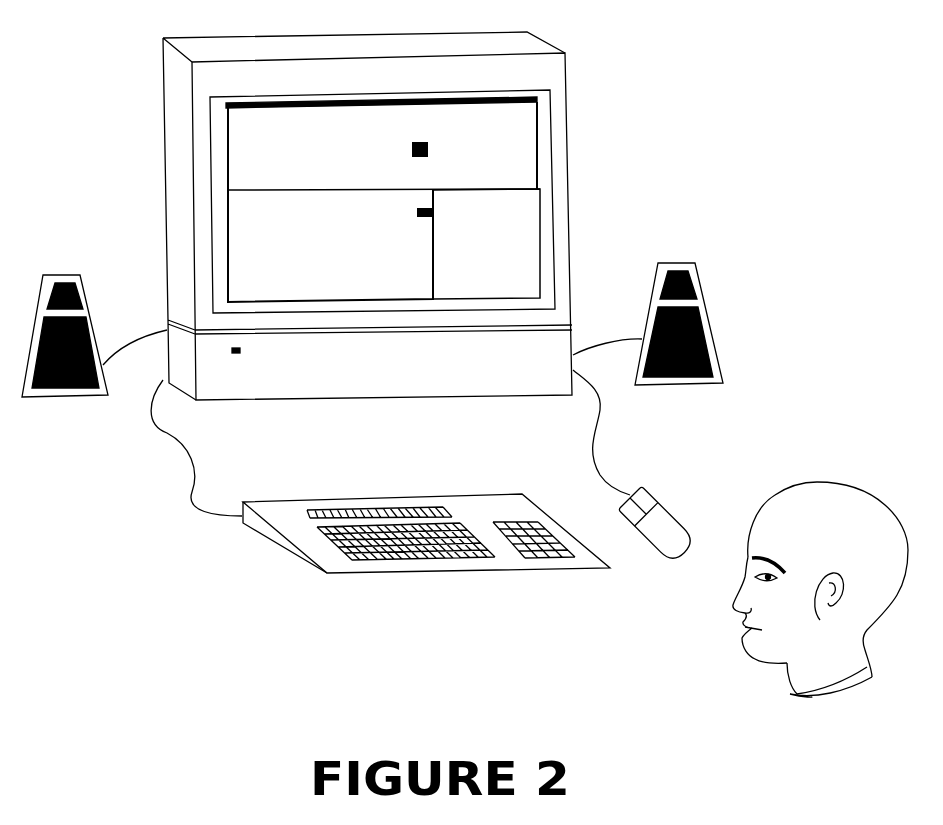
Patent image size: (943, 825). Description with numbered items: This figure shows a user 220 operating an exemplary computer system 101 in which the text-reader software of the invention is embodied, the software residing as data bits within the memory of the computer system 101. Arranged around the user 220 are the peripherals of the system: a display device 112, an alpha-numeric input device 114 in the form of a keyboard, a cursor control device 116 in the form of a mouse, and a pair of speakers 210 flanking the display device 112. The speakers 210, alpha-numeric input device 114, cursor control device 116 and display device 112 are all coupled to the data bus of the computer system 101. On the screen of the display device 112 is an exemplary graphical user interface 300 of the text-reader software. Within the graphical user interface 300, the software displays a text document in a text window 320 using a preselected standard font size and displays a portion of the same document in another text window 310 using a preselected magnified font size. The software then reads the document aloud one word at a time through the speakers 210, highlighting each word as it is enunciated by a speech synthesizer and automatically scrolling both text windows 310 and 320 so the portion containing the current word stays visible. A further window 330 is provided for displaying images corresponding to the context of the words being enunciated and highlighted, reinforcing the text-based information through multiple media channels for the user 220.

The computer system 101 is at (573, 343).
The display device 112 is at (532, 52).
The alpha-numeric input device 114 is at (257, 530).
The cursor control device 116 is at (645, 486).
The speakers 210 is at (53, 275).
The user 220 is at (827, 478).
The graphical user interface 300 is at (505, 90).
The text window 310 is at (227, 157).
The text window 320 is at (228, 261).
The window 330 is at (541, 246).